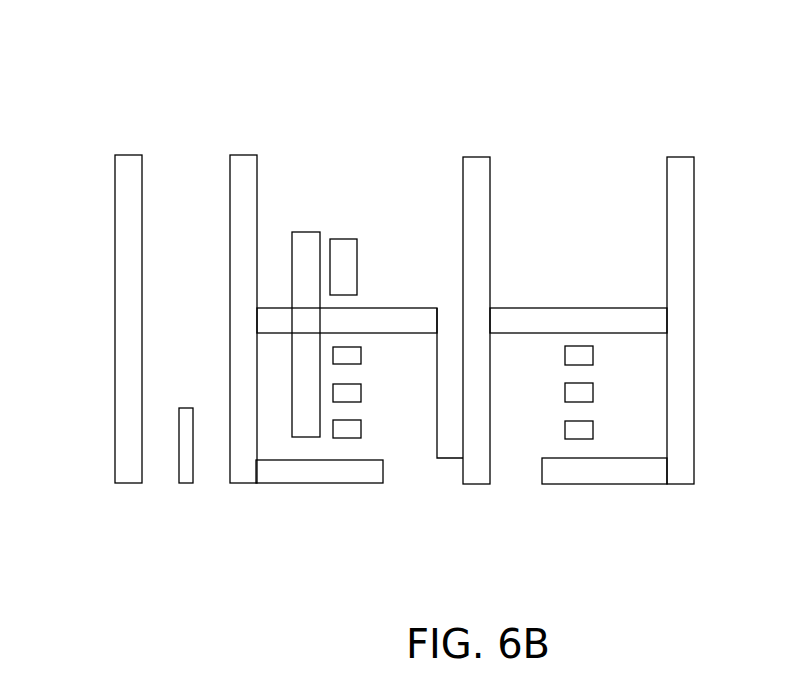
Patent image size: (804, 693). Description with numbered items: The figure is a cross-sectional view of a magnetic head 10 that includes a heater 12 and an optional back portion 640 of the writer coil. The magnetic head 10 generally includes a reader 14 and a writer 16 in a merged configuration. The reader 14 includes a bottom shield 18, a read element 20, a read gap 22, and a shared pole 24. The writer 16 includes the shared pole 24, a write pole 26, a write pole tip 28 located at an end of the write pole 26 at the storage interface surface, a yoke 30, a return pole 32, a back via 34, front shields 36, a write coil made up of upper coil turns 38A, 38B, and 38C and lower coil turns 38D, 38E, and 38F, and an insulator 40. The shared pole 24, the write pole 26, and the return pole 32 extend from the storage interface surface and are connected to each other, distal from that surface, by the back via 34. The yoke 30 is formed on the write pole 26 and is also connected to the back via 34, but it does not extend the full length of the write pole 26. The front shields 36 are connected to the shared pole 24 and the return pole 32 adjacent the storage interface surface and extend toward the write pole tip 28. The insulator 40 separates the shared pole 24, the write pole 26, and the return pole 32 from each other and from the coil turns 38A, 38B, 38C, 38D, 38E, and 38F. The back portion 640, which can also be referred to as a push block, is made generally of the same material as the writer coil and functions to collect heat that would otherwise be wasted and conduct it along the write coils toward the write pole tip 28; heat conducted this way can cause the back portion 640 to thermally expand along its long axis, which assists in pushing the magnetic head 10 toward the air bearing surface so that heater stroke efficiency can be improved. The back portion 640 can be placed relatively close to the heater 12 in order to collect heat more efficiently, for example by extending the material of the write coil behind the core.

The magnetic head 10 is at (122, 111).
The heater 12 is at (305, 350).
The reader 14 is at (257, 520).
The writer 16 is at (692, 552).
The bottom shield 18 is at (115, 352).
The read element 20 is at (185, 408).
The read gap 22 is at (232, 493).
The shared pole 24 is at (257, 446).
The write pole 26 is at (463, 250).
The write pole tip 28 is at (487, 488).
The yoke 30 is at (437, 468).
The return pole 32 is at (694, 366).
The back via 34 is at (618, 308).
The front shields 36 is at (338, 484).
The upper coil turn 38A is at (593, 430).
The upper coil turn 38B is at (593, 393).
The upper coil turn 38C is at (593, 355).
The lower coil turn 38D is at (350, 430).
The lower coil turn 38E is at (348, 396).
The lower coil turn 38F is at (351, 355).
The insulator 40 is at (498, 462).
The back portion 640 is at (344, 248).